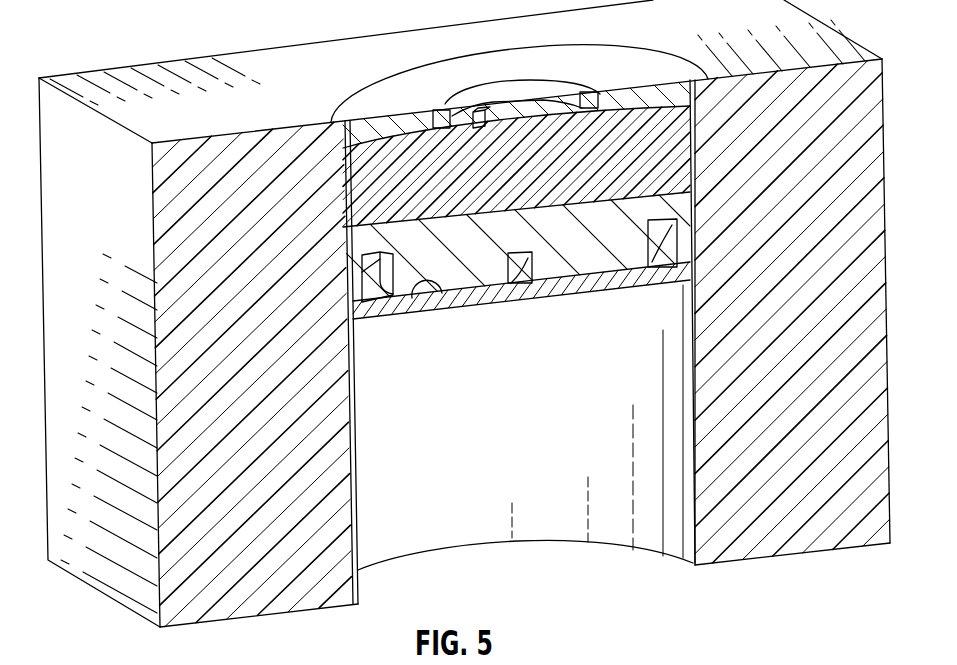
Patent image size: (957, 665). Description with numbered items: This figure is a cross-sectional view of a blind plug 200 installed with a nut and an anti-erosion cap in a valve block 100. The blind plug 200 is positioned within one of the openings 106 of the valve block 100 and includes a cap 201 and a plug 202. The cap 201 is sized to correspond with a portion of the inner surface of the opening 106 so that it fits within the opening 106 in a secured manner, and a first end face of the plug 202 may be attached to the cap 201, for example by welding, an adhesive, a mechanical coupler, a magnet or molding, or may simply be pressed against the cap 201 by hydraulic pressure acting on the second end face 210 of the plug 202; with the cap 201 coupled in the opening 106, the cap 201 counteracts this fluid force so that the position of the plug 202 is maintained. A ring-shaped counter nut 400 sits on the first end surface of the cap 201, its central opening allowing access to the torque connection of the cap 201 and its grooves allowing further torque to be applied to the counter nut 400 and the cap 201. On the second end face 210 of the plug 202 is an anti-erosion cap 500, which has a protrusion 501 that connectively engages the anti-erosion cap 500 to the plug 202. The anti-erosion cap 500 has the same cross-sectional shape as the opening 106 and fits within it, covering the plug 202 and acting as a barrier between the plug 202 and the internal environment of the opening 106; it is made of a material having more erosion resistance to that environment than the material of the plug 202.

The blind plug 200 is at (112, 26).
The valve block 100 is at (722, 423).
The openings 106 is at (358, 448).
The counter nut 400 is at (615, 83).
The cap 201 is at (667, 174).
The plug 202 is at (637, 227).
The second end face 210 is at (443, 307).
The anti-erosion cap 500 is at (649, 283).
The protrusion 501 is at (511, 283).